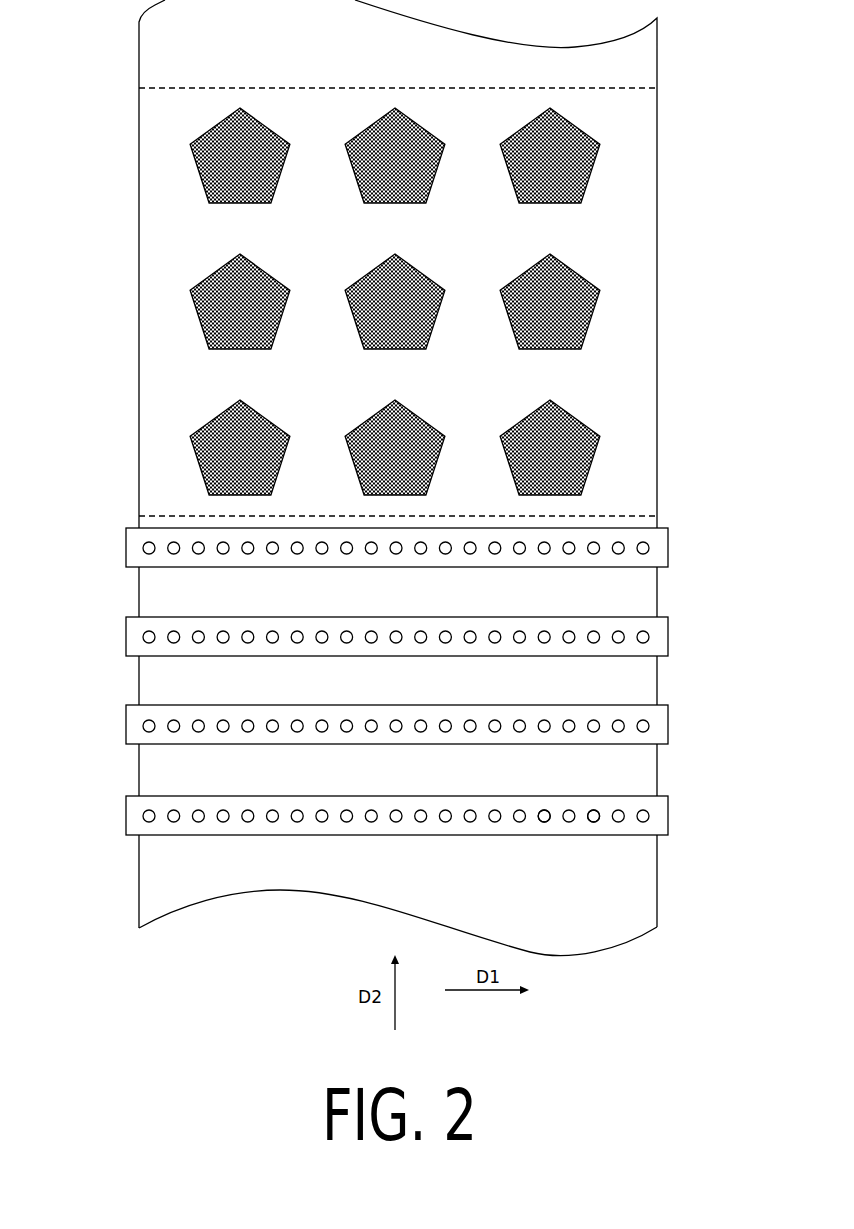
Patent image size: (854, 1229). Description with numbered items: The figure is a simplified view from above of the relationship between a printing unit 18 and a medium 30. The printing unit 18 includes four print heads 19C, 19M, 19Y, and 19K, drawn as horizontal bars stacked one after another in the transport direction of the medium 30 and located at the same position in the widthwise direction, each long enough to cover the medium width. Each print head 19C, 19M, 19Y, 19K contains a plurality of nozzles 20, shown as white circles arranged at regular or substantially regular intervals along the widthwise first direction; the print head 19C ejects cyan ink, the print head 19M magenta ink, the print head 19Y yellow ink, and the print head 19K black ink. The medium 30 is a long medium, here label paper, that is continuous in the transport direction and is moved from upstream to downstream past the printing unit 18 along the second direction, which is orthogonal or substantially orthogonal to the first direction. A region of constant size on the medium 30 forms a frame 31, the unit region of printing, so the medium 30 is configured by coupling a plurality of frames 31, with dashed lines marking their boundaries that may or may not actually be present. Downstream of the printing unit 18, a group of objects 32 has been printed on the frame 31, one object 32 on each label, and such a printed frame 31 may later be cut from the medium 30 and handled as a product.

The printing unit 18 is at (115, 517).
The print head 19K is at (668, 545).
The print head 19Y is at (668, 637).
The print head 19M is at (668, 723).
The print head 19C is at (668, 818).
The nozzle 20 is at (545, 822).
The medium 30 is at (302, 880).
The frame 31 is at (668, 88).
The object 32 is at (210, 170).